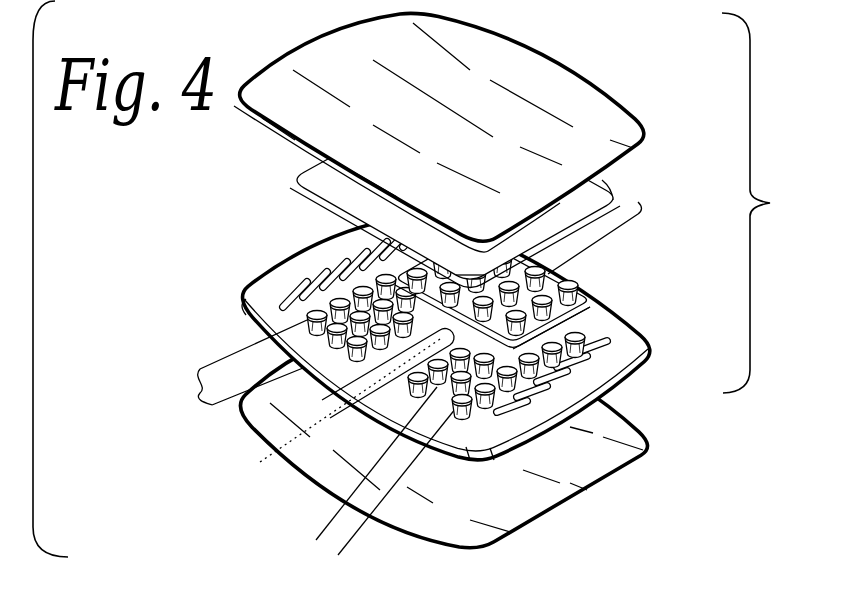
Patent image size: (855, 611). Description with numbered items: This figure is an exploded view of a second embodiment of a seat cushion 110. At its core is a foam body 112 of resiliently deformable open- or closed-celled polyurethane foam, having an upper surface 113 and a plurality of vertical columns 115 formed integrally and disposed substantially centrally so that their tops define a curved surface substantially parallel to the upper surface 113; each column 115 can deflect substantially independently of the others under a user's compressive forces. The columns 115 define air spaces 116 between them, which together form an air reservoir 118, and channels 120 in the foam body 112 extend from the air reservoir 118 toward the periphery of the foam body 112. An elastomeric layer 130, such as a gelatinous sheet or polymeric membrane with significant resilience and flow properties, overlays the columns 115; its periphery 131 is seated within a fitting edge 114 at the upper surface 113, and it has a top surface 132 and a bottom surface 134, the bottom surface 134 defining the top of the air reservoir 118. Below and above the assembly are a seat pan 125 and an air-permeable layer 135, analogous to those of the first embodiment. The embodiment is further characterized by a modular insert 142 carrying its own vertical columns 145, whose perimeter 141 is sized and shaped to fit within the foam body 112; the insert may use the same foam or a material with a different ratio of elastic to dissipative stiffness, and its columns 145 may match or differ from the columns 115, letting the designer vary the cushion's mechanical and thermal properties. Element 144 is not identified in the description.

The seat cushion 110 is at (426, 279).
The foam body 112 is at (232, 282).
The upper surface 113 is at (263, 302).
The fitting edge 114 is at (555, 338).
The vertical columns 115 is at (362, 528).
The air spaces 116 is at (493, 462).
The air reservoir 118 is at (565, 358).
The channels 120 is at (225, 399).
The seat pan 125 is at (320, 487).
The elastomeric layer 130 is at (280, 182).
The periphery 131 is at (640, 206).
The top surface 132 is at (470, 262).
The bottom surface 134 is at (307, 200).
The air-permeable layer 135 is at (418, 149).
The perimeter 141 is at (333, 505).
The modular insert 142 is at (548, 325).
The hidden channel 144 is at (260, 462).
The vertical columns 145 is at (548, 262).